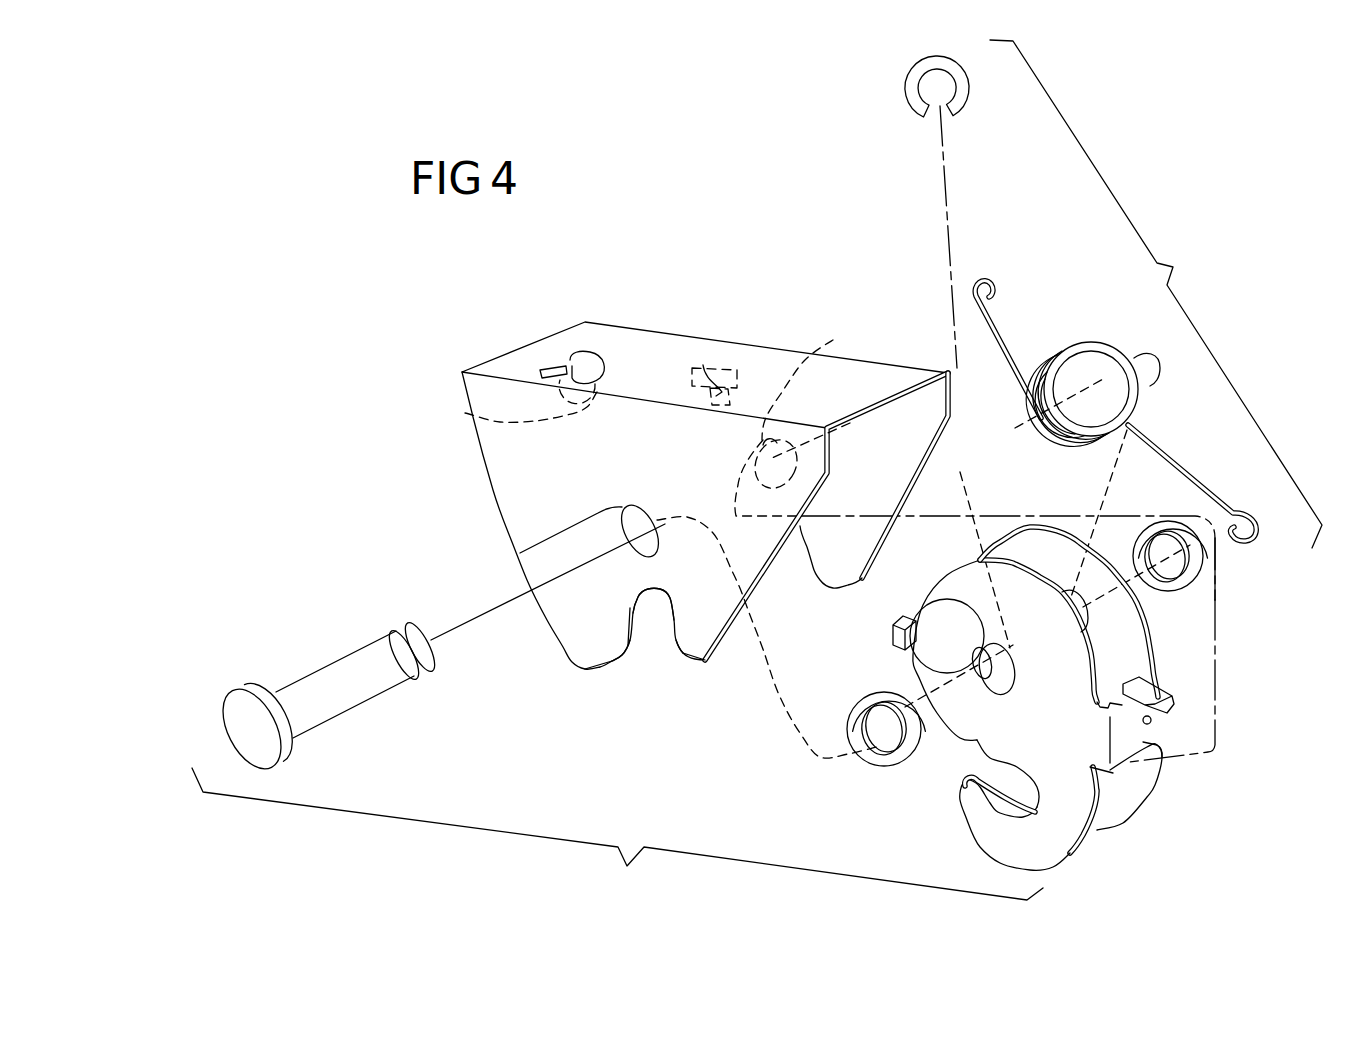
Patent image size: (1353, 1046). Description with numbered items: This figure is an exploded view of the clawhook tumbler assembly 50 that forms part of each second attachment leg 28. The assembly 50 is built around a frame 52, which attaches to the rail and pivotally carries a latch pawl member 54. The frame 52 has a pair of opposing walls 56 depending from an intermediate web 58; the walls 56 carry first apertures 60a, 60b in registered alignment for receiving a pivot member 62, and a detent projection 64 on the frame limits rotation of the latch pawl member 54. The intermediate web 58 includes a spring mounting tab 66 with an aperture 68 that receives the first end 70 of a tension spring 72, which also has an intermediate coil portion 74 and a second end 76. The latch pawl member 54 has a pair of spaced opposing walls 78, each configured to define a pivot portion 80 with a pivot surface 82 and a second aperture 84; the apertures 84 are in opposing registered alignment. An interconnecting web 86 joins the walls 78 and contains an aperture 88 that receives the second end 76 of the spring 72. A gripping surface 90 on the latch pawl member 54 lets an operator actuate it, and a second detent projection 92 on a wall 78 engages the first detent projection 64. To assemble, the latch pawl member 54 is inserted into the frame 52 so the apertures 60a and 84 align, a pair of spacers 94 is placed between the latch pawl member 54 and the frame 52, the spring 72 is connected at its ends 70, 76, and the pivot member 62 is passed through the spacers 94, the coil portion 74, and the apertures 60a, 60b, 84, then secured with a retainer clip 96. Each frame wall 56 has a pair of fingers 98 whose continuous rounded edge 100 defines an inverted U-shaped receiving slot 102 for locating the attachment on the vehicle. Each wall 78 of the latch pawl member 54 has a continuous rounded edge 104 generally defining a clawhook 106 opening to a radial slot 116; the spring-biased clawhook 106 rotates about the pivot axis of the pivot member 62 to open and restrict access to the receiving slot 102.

The second attachment leg 28 is at (751, 473).
The clawhook tumbler assembly 50 is at (684, 432).
The frame 52 is at (694, 565).
The latch pawl member 54 is at (1019, 705).
The opposing walls 56 is at (688, 480).
The intermediate web 58 is at (709, 267).
The first aperture 60a is at (562, 535).
The first aperture 60b is at (818, 410).
The pivot member 62 is at (438, 651).
The detent projection 64 is at (727, 353).
The spring mounting tab 66 is at (600, 345).
The aperture 68 is at (508, 412).
The first end 70 is at (1008, 335).
The tension spring 72 is at (1133, 396).
The intermediate coil portion 74 is at (1100, 376).
The second end 76 is at (1209, 483).
The opposing walls 78 is at (1065, 690).
The pivot portion 80 is at (927, 668).
The pivot surface 82 is at (925, 630).
The second aperture 84 is at (1041, 766).
The interconnecting web 86 is at (1135, 695).
The aperture 88 is at (1178, 723).
The gripping surface 90 is at (1166, 688).
The second detent projection 92 is at (870, 633).
The spacers 94 is at (1017, 662).
The retainer clip 96 is at (902, 92).
The fingers 98 is at (645, 685).
The continuous rounded edge 100 is at (633, 679).
The receiving slot 102 is at (644, 657).
The continuous rounded edge 104 is at (969, 781).
The clawhook 106 is at (969, 821).
The radial slot 116 is at (998, 836).